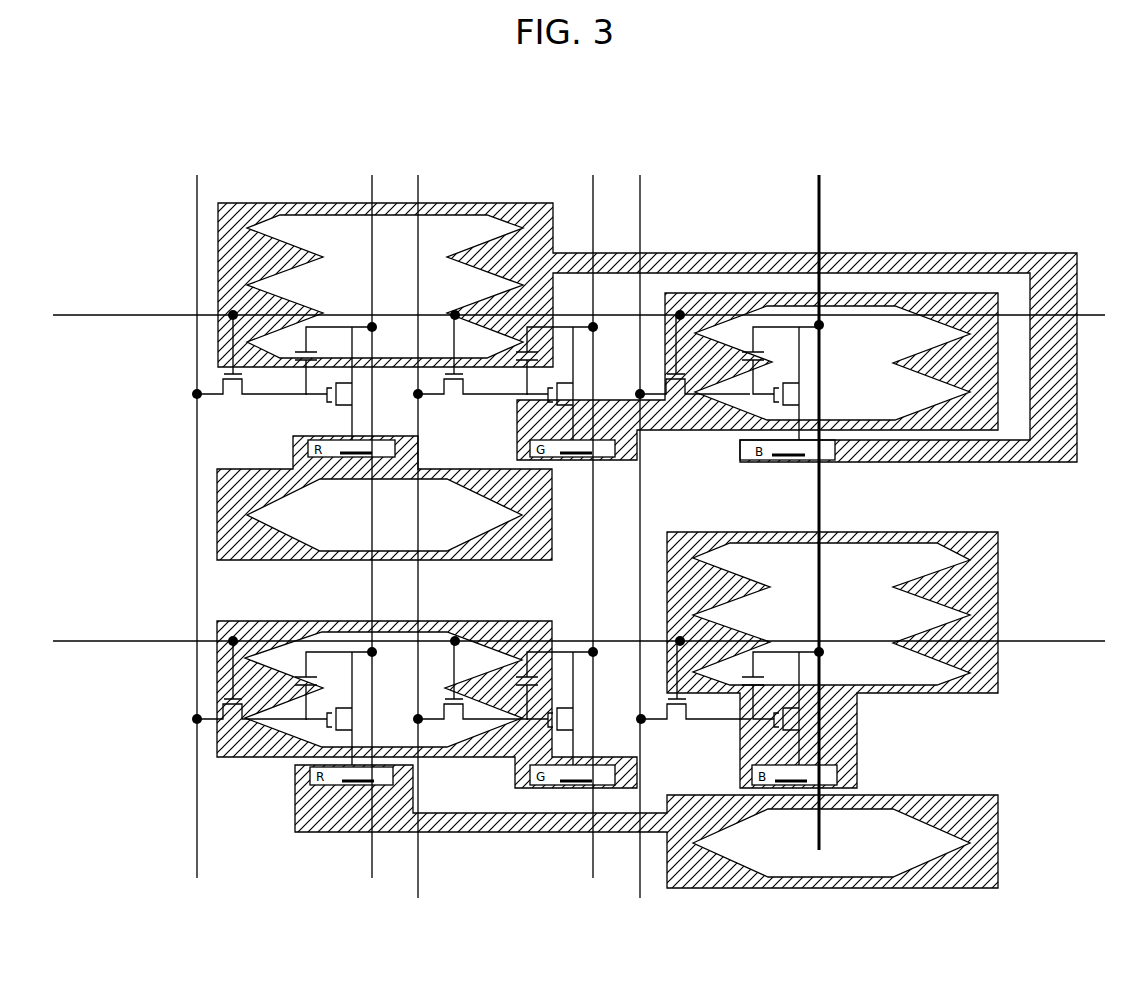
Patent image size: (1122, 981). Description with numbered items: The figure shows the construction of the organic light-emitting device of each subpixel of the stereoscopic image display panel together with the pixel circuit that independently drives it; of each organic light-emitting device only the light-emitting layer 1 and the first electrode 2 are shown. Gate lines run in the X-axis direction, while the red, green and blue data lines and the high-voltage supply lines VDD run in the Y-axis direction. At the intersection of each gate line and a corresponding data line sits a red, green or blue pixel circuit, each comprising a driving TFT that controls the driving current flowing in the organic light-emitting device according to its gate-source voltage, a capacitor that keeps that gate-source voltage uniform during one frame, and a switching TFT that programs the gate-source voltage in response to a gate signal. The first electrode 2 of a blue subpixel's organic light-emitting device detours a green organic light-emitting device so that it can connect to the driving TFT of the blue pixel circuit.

The light-emitting layer 1 is at (455, 237).
The first electrode 2 is at (528, 222).
The high-voltage supply line VDD is at (593, 536).